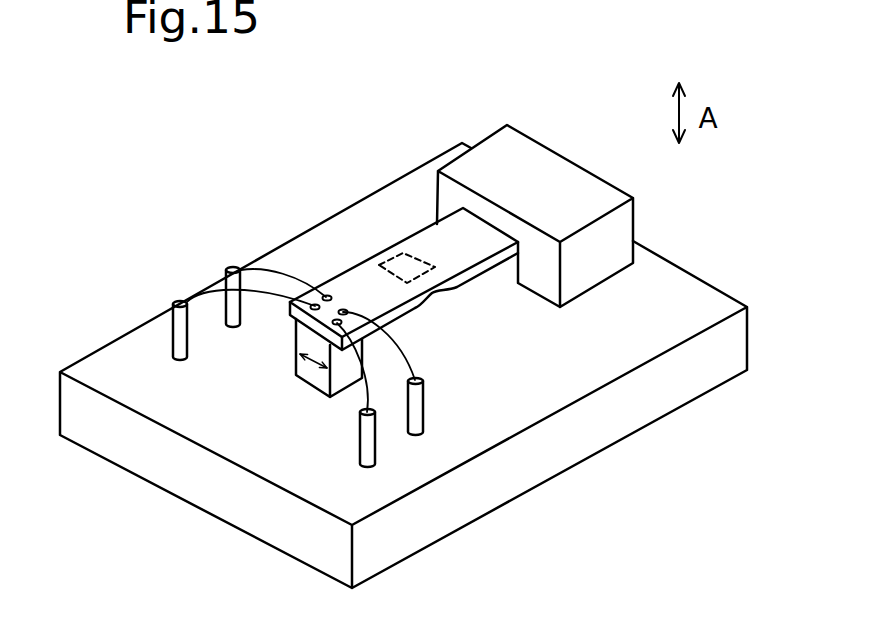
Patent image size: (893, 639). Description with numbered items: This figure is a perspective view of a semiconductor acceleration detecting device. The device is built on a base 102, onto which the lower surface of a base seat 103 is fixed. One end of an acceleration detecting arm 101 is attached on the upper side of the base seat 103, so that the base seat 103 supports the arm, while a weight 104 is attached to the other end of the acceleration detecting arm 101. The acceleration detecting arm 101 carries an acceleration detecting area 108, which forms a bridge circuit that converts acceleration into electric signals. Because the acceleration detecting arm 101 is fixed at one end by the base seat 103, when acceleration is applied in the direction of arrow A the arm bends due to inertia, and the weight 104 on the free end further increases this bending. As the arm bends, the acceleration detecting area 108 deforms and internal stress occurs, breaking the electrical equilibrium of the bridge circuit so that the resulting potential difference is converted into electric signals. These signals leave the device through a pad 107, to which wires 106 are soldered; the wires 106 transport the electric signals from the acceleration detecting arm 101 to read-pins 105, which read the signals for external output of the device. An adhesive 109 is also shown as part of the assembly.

The acceleration detecting arm 101 is at (423, 245).
The base 102 is at (700, 303).
The base seat 103 is at (312, 377).
The weight 104 is at (567, 187).
The read-pins 105 is at (173, 342).
The wires 106 is at (240, 240).
The pad 107 is at (327, 296).
The acceleration detecting area 108 is at (390, 258).
The adhesive 109 is at (264, 256).